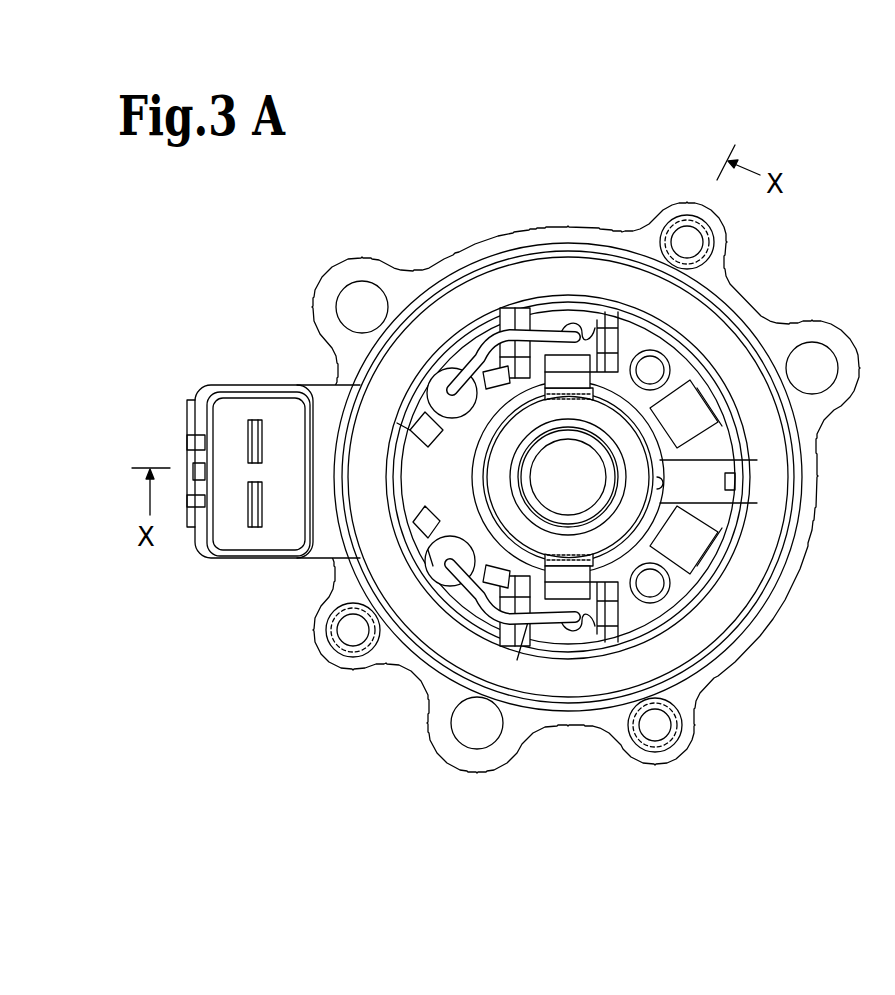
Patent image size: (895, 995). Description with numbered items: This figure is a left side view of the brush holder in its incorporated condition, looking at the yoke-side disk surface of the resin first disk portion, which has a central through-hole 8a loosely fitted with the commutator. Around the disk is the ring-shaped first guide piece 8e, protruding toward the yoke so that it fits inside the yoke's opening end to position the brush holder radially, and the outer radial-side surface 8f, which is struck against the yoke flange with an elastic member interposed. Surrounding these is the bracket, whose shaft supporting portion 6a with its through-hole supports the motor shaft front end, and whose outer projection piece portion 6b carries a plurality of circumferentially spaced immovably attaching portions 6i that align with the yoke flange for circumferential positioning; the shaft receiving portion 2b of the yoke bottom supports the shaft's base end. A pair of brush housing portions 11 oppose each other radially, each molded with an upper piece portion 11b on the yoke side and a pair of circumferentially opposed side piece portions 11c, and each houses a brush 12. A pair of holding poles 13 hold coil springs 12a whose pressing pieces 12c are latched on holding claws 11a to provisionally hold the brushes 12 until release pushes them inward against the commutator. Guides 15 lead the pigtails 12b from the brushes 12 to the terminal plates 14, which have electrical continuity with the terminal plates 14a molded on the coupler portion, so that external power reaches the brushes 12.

The shaft receiving portion 2b is at (240, 385).
The shaft supporting portion 6a is at (630, 450).
The projection piece portion 6b is at (758, 318).
The immovably attaching portion 6i is at (719, 227).
The through-hole 8a is at (660, 506).
The first guide piece 8e is at (345, 370).
The outer radial-side surface 8f is at (722, 440).
The brush housing portion 11 is at (562, 322).
The holding claw 11a is at (588, 322).
The upper piece portion 11b is at (573, 634).
The side piece portion 11c is at (528, 622).
The brush 12 is at (535, 318).
The coil spring 12a is at (637, 337).
The pigtail 12b is at (440, 372).
The pressing piece 12c is at (572, 333).
The holding pole 13 is at (656, 367).
The terminal plate 14 is at (397, 423).
The terminal plate 14a is at (247, 442).
The guide 15 is at (498, 362).